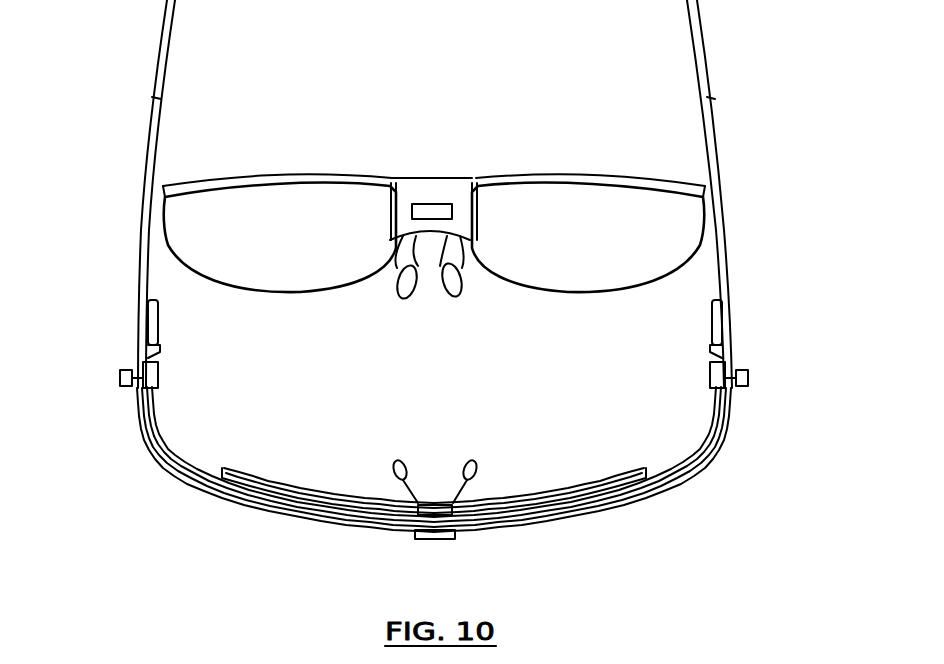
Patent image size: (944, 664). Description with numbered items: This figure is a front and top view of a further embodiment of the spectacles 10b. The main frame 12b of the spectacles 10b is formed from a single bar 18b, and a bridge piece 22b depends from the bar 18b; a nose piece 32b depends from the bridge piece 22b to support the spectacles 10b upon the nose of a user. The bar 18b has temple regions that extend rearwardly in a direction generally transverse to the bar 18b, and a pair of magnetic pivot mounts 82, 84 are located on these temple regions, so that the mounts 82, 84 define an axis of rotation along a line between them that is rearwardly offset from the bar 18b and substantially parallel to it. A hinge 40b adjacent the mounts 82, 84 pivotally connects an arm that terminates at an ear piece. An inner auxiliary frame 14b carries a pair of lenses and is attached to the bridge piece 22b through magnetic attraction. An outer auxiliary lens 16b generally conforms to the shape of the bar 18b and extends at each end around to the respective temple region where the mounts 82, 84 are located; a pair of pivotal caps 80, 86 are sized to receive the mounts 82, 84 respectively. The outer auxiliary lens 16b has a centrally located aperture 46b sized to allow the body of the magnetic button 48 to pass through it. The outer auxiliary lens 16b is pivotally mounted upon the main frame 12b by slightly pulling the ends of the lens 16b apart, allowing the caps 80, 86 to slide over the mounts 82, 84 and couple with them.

The spectacles 10b is at (150, 481).
The main frame 12b is at (738, 353).
The inner auxiliary frame 14b is at (600, 476).
The outer auxiliary lens 16b is at (570, 278).
The bar 18b is at (510, 176).
The bridge piece 22b is at (482, 276).
The nose piece 32b is at (396, 298).
The hinge 40b is at (140, 345).
The aperture 46b is at (431, 210).
The magnetic button 48 is at (455, 540).
The pivotal cap 80 is at (120, 377).
The magnetic pivot mount 82 is at (160, 378).
The magnetic pivot mount 84 is at (716, 377).
The pivotal cap 86 is at (746, 372).